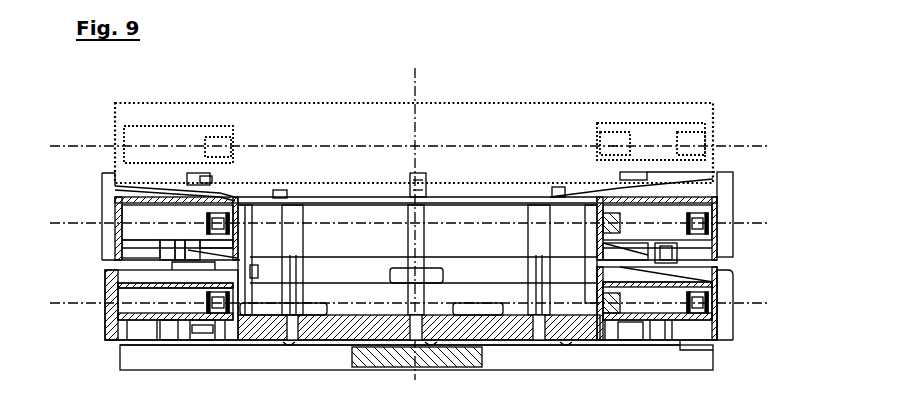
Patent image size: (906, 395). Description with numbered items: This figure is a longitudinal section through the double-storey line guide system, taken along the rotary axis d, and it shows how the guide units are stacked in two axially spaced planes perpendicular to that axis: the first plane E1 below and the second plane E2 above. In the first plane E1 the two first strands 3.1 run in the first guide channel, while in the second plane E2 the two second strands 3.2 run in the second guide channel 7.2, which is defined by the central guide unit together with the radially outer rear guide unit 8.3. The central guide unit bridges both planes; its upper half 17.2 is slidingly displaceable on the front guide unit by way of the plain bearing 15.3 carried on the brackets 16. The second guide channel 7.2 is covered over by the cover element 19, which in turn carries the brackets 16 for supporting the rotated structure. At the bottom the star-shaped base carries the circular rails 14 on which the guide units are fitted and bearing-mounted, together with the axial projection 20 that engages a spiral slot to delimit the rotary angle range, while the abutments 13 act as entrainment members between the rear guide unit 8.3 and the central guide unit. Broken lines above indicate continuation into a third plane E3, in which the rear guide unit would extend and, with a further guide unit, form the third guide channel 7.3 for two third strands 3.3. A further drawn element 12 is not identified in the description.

The third strands 3.3 is at (207, 140).
The cover element 19 is at (105, 163).
The brackets 16 is at (107, 178).
The rear guide unit 8.3 is at (118, 197).
The second guide channel 7.2 is at (143, 220).
The bearing ring 12 is at (145, 241).
The upper half 17.2 is at (173, 245).
The plain bearing 15.3 is at (108, 268).
The abutments 13 is at (210, 330).
The axial projection 20 is at (431, 371).
The circular rails 14 is at (693, 333).
The third guide channel 7.3 is at (657, 127).
The second strands 3.2 is at (715, 208).
The first strands 3.1 is at (713, 290).
The rotary axis d is at (426, 224).
The first plane E1 is at (423, 305).
The second plane E2 is at (423, 225).
The third plane E3 is at (423, 148).